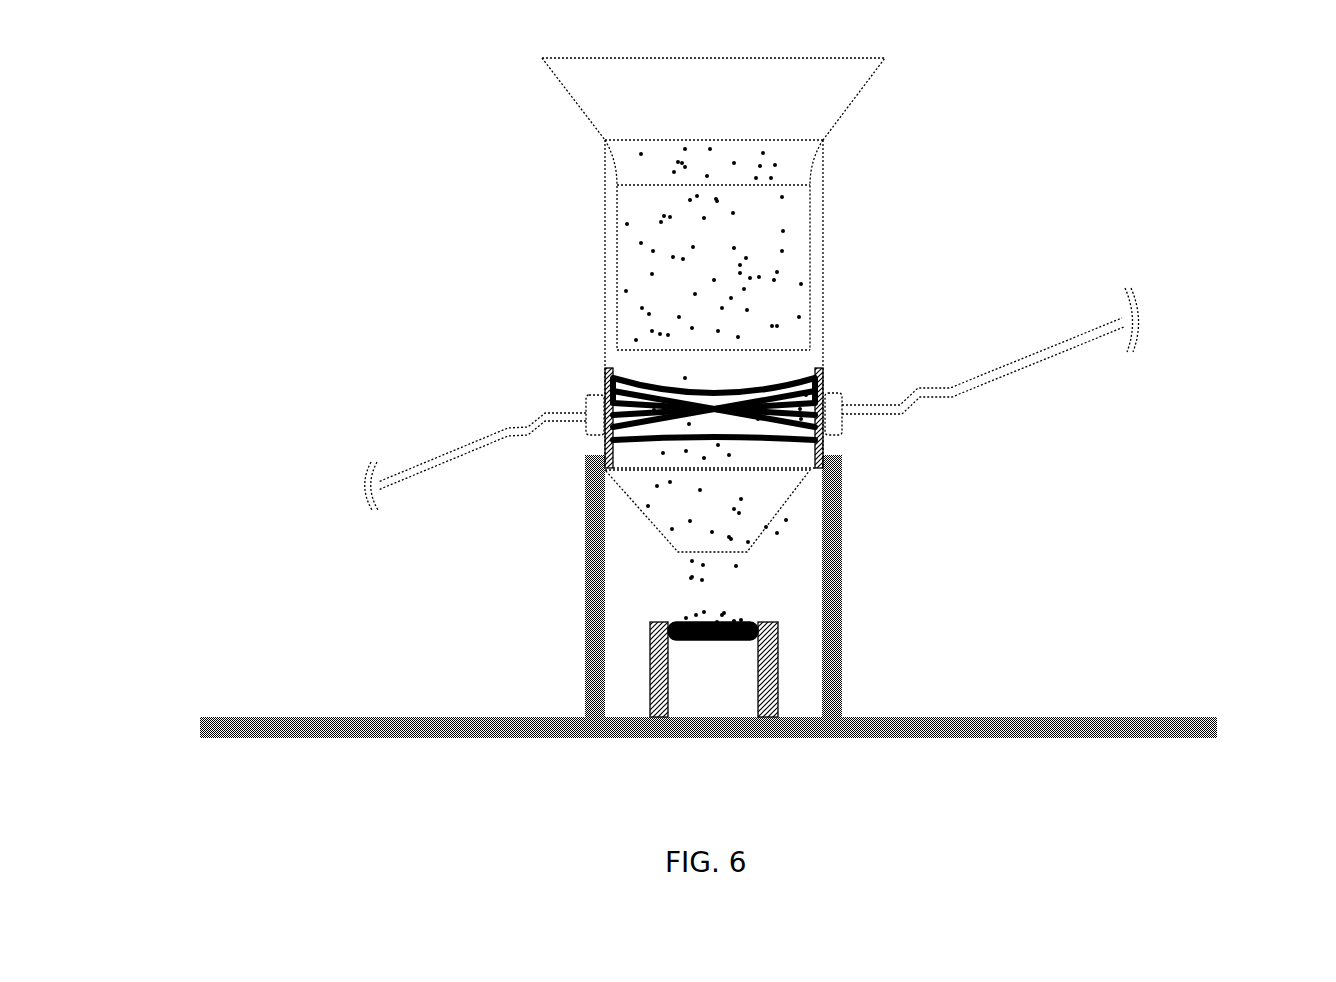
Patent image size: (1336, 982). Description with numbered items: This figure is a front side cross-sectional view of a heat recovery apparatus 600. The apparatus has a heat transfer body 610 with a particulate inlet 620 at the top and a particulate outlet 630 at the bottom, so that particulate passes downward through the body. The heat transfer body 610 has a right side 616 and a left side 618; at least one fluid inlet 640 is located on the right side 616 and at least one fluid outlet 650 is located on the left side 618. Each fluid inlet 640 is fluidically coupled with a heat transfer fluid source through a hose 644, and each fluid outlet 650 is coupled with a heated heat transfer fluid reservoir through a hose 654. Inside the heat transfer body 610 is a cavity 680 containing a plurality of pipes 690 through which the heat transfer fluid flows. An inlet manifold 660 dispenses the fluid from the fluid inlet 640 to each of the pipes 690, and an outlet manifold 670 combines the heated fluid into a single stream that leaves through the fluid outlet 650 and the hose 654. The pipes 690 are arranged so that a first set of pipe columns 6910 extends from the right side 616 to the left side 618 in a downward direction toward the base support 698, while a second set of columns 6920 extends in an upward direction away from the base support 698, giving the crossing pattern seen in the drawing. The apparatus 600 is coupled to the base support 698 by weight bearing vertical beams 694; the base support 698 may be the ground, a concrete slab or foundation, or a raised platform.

The heat recovery apparatus 600 is at (990, 194).
The heat transfer body 610 is at (615, 258).
The right side 616 is at (598, 178).
The left side 618 is at (832, 176).
The particulate inlet 620 is at (555, 86).
The particulate outlet 630 is at (665, 548).
The fluid inlet 640 is at (582, 410).
The hose 644 is at (403, 485).
The fluid outlet 650 is at (845, 430).
The hose 654 is at (1080, 348).
The inlet manifold 660 is at (598, 451).
The outlet manifold 670 is at (822, 445).
The cavity 680 is at (690, 460).
The plurality of pipes 690 is at (747, 424).
The first set of pipe columns 6910 is at (630, 375).
The second set of columns 6920 is at (803, 380).
The weight bearing vertical beams 694 is at (853, 582).
The base support 698 is at (1188, 713).